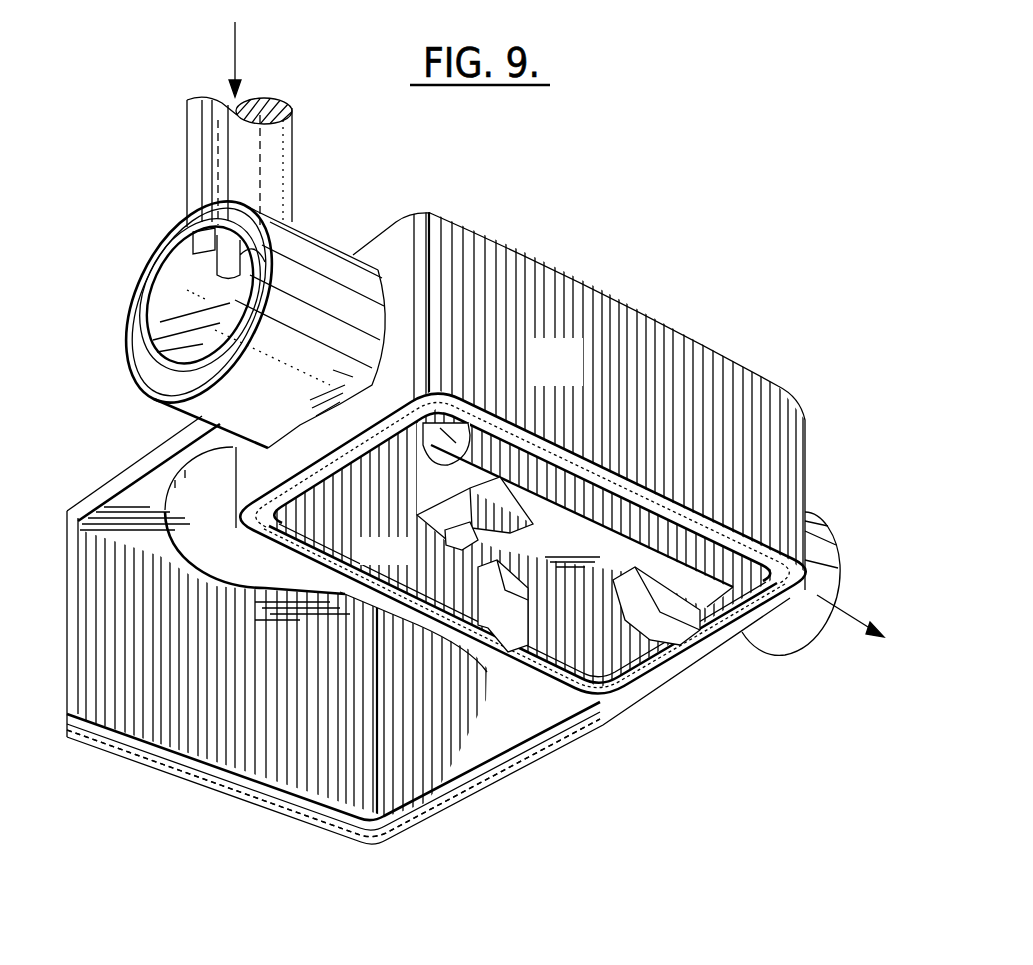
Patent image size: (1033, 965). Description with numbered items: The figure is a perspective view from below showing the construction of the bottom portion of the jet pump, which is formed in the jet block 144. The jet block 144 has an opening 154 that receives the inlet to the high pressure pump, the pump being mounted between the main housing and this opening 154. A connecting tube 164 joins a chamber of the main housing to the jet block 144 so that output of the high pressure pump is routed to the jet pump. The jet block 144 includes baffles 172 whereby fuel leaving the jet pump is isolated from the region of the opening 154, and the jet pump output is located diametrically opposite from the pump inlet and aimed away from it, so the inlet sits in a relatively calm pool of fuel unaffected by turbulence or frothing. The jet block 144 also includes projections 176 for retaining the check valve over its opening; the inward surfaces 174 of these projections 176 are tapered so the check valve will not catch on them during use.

The jet block 144 is at (578, 370).
The opening 154 is at (195, 482).
The connecting tube 164 is at (272, 161).
The baffles 172 is at (213, 747).
The inward surfaces 174 is at (500, 535).
The projections 176 is at (462, 533).